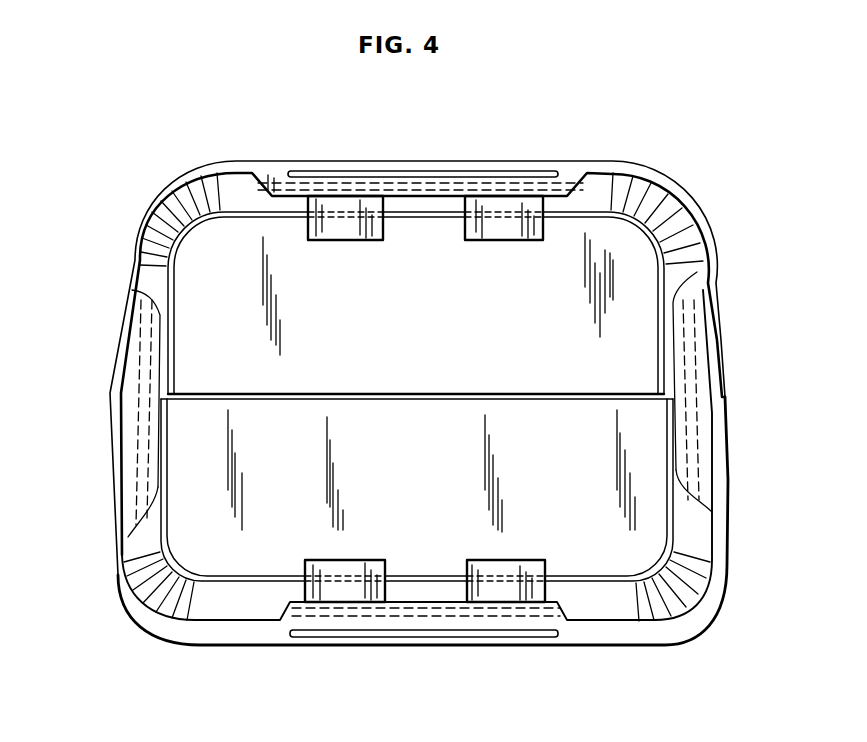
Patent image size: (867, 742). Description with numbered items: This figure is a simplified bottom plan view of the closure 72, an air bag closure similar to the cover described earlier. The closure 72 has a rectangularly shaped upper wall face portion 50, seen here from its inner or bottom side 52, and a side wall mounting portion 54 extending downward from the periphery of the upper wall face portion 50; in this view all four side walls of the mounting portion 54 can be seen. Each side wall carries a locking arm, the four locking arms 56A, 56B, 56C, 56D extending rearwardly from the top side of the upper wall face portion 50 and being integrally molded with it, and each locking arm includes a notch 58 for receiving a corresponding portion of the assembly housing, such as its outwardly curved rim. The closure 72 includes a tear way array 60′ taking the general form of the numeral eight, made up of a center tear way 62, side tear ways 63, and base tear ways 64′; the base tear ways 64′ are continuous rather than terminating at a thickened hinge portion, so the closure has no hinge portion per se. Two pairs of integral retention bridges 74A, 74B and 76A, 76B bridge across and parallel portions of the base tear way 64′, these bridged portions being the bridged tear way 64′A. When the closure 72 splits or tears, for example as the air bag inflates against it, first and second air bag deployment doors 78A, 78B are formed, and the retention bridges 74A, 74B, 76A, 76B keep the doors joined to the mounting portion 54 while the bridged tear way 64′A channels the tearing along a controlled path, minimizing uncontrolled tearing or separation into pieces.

The upper wall face portion 50 is at (635, 265).
The inner or bottom side 52 is at (648, 453).
The side wall mounting portion 54 is at (189, 176).
The locking arm 56A is at (481, 171).
The locking arm 56B is at (702, 337).
The locking arm 56C is at (500, 637).
The locking arm 56D is at (132, 335).
The notch 58 is at (338, 183).
The tear way array 60′ is at (540, 395).
The center tear way 62 is at (215, 393).
The side tear ways 63 is at (160, 535).
The base tear ways 64′ is at (238, 212).
The bridged tear way 64′A is at (375, 180).
The closure 72 is at (706, 168).
The retention bridge 74A is at (311, 196).
The retention bridge 74B is at (533, 196).
The retention bridge 76A is at (316, 597).
The retention bridge 76B is at (533, 594).
The first air bag deployment door 78A is at (437, 338).
The second air bag deployment door 78B is at (430, 500).